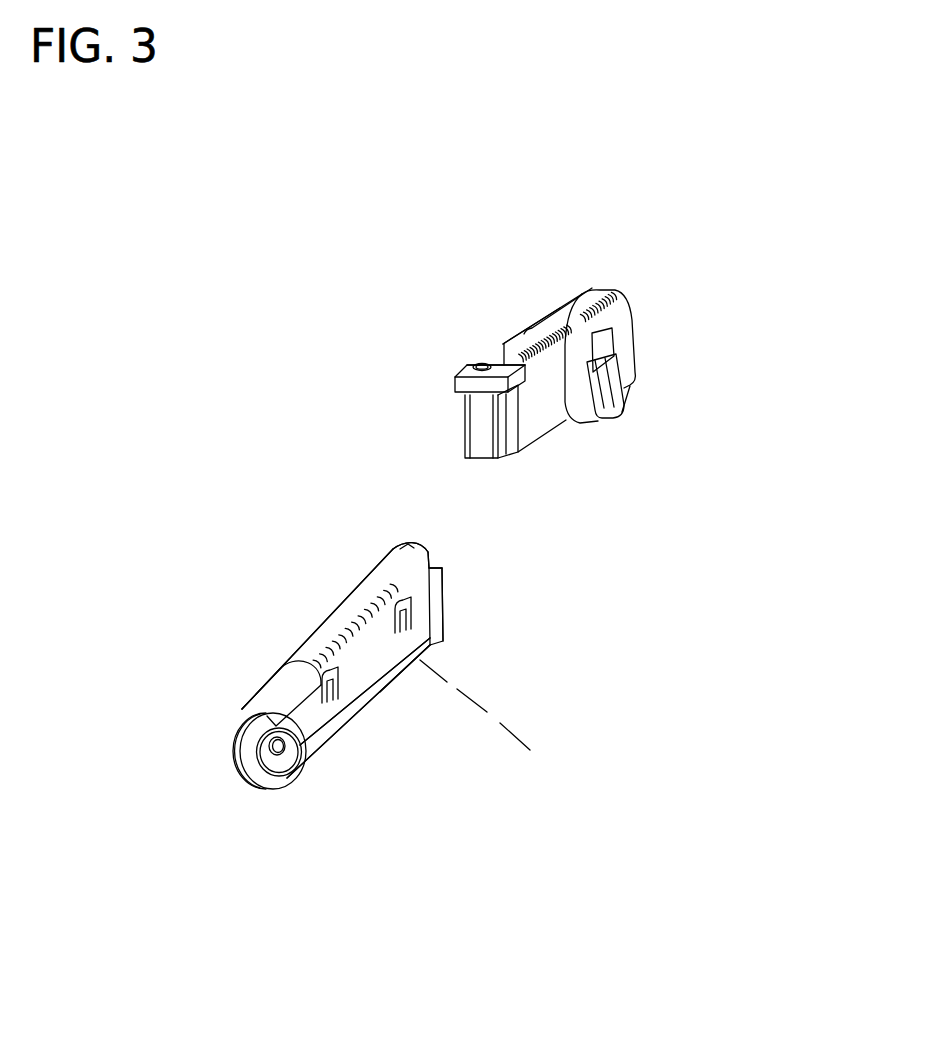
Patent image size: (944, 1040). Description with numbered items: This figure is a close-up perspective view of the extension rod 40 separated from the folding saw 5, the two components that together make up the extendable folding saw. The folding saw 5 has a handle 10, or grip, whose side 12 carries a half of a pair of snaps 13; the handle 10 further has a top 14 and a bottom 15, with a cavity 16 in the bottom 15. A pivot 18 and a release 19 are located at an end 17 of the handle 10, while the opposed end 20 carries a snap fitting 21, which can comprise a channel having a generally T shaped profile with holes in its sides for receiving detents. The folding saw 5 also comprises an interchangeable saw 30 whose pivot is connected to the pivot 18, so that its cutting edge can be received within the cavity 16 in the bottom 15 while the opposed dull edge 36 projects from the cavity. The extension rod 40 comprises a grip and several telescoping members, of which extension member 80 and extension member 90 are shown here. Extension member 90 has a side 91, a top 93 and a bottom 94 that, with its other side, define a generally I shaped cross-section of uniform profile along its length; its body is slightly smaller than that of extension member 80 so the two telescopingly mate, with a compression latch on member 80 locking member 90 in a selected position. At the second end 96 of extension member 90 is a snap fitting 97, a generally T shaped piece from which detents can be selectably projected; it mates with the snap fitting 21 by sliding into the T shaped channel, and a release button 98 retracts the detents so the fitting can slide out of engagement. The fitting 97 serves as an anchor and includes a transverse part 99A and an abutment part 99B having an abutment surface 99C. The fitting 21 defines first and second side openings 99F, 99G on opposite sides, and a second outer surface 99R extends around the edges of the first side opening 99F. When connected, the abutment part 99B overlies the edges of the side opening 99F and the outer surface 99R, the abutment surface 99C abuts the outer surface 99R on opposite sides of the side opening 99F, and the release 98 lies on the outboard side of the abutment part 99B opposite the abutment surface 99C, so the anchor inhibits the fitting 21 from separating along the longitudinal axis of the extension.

The folding saw 5 is at (318, 624).
The handle 10 is at (350, 592).
The side 12 is at (300, 793).
The snaps 13 is at (325, 675).
The top 14 is at (398, 548).
The bottom 15 is at (442, 668).
The cavity 16 is at (498, 731).
The end 17 is at (290, 657).
The pivot 18 is at (277, 762).
The release 19 is at (262, 682).
The opposed end 20 is at (443, 602).
The snap fitting 21 is at (443, 592).
The saw 30 is at (350, 733).
The dull edge 36 is at (375, 707).
The extension rod 40 is at (513, 342).
The extension member 80 is at (622, 345).
The extension member 90 is at (528, 422).
The side 91 is at (588, 284).
The top 93 is at (507, 343).
The bottom 94 is at (528, 420).
The second end 96 is at (481, 360).
The snap fitting 97 is at (484, 366).
The release button 98 is at (470, 361).
The transverse part 99A is at (483, 428).
The abutment part 99B is at (457, 389).
The abutment surface 99C is at (462, 402).
The first side opening 99F is at (445, 540).
The second side opening 99G is at (447, 653).
The second outer surface 99R is at (443, 567).